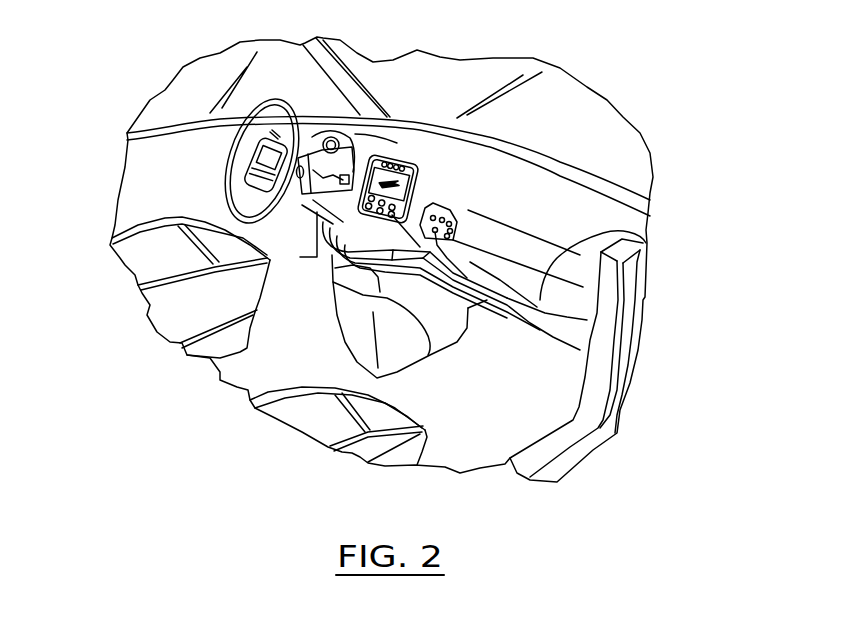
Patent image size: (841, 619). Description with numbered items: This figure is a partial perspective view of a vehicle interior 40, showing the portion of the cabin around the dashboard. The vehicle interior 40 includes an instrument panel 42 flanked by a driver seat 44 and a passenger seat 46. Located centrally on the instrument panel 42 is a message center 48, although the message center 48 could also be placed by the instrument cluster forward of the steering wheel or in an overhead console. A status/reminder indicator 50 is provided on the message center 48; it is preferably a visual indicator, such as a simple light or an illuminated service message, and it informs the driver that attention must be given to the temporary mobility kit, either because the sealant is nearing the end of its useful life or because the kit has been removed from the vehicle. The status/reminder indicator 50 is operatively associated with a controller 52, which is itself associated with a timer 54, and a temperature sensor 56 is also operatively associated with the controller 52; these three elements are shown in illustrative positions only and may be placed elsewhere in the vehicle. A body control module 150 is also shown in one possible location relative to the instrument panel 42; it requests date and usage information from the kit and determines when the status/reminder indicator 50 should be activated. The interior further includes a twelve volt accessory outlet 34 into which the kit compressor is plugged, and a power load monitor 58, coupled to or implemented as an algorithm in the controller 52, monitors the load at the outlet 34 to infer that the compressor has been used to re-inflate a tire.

The vehicle interior 40 is at (188, 48).
The 12 volt accessory outlet 34 is at (403, 342).
The instrument panel 42 is at (590, 222).
The driver seat 44 is at (138, 260).
The passenger seat 46 is at (303, 420).
The message center 48 is at (384, 160).
The status/reminder indicator 50 is at (440, 175).
The controller 52 is at (443, 197).
The timer 54 is at (497, 282).
The temperature sensor 56 is at (455, 229).
The power load monitor 58 is at (445, 219).
The body control module 150 is at (587, 320).